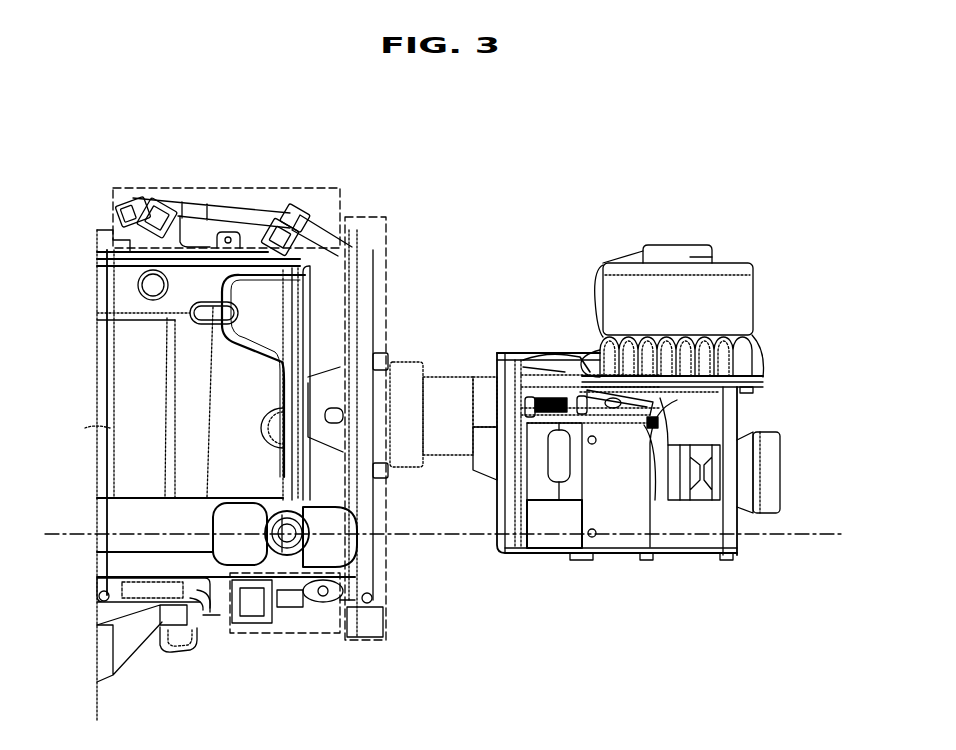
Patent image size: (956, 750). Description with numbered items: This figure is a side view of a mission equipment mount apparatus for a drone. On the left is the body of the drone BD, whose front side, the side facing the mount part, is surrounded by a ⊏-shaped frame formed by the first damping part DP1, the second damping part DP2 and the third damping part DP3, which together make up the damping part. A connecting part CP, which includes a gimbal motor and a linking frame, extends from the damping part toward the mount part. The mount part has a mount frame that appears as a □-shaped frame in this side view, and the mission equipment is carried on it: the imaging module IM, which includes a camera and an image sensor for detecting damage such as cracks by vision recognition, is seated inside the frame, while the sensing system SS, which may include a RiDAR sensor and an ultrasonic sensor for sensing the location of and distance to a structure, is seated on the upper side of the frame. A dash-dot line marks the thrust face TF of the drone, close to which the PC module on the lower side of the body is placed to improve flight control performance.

The body of the drone BD is at (137, 380).
The first damping part DP1 is at (278, 188).
The second damping part DP2 is at (373, 218).
The third damping part DP3 is at (287, 635).
The connecting part CP is at (452, 385).
The sensing system SS is at (733, 268).
The imaging module IM is at (768, 473).
The thrust face TF is at (461, 535).